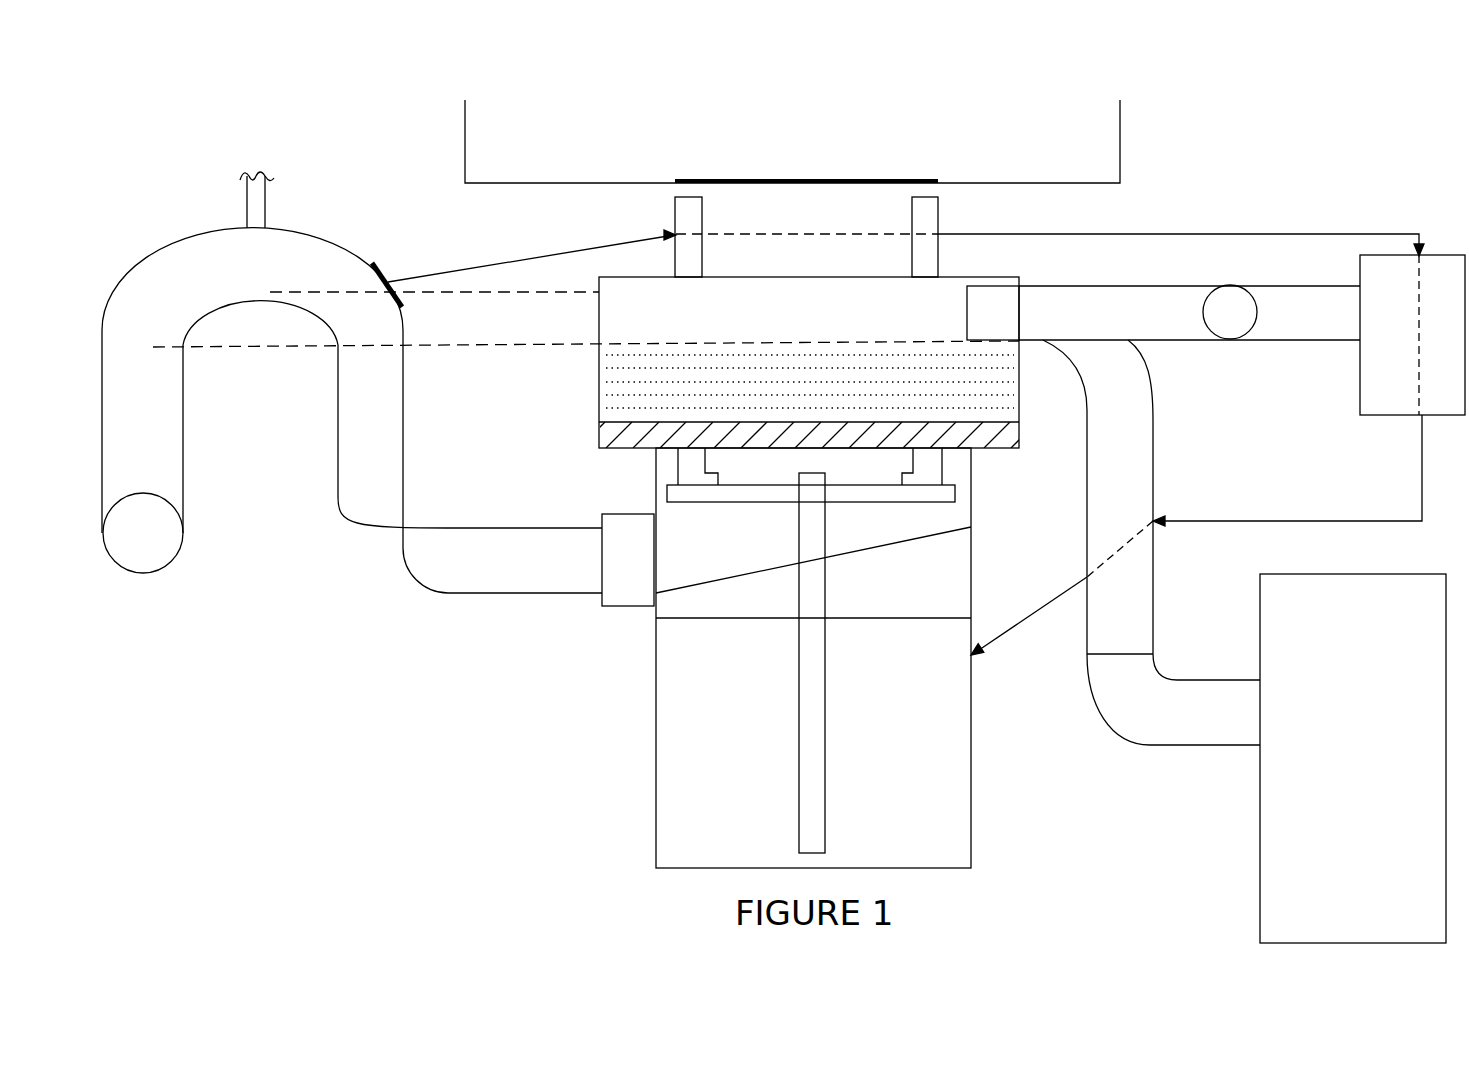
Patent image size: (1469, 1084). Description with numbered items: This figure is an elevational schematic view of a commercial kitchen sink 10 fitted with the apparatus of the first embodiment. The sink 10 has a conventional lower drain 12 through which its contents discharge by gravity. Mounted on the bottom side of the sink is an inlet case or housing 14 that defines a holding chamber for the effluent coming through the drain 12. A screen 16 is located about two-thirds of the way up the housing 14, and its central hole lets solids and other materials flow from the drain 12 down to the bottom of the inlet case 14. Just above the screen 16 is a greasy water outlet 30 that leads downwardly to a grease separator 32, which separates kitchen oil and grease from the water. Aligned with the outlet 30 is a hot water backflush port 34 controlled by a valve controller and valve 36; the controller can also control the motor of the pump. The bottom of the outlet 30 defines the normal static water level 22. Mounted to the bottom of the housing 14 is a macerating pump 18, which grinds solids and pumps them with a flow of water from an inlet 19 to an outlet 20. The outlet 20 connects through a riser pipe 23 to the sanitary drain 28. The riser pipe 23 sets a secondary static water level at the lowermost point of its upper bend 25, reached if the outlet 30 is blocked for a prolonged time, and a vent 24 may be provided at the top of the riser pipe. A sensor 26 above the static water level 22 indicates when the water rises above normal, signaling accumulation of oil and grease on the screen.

The commercial kitchen sink 10 is at (1120, 137).
The lower drain 12 is at (858, 180).
The inlet case or housing 14 is at (975, 266).
The screen 16 is at (680, 343).
The macerating pump 18 is at (920, 590).
The inlet 19 is at (877, 443).
The outlet 20 is at (533, 575).
The normal static water level 22 is at (420, 350).
The riser pipe 23 is at (375, 433).
The vent 24 is at (268, 216).
The upper bend 25 is at (418, 293).
The sensor 26 is at (380, 270).
The sanitary drain 28 is at (153, 548).
The greasy water outlet 30 is at (1040, 340).
The grease separator 32 is at (1353, 758).
The hot water backflush port 34 is at (1170, 313).
The valve controller and valve 36 is at (1412, 335).